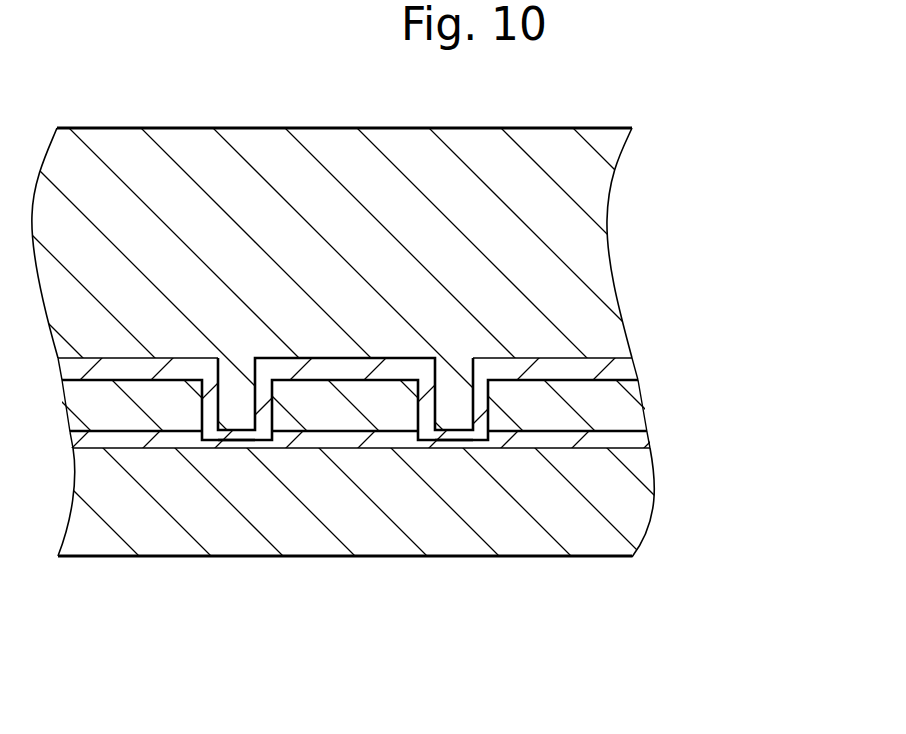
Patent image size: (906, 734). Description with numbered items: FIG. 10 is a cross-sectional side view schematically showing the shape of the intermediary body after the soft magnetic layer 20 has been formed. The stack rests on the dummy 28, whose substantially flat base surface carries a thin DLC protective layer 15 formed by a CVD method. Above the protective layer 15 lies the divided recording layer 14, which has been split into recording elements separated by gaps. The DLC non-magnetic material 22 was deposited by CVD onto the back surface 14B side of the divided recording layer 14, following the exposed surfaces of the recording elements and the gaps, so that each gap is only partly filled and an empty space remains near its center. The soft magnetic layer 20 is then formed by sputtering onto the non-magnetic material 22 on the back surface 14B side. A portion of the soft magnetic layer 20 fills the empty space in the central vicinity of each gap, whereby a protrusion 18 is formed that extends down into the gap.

The soft magnetic layer 20 is at (610, 182).
The back surface 14B is at (613, 366).
The non-magnetic material 22 is at (638, 369).
The divided recording layer 14 is at (664, 412).
The DLC protective layer 15 is at (650, 443).
The dummy 28 is at (653, 493).
The protrusion 18 is at (242, 415).